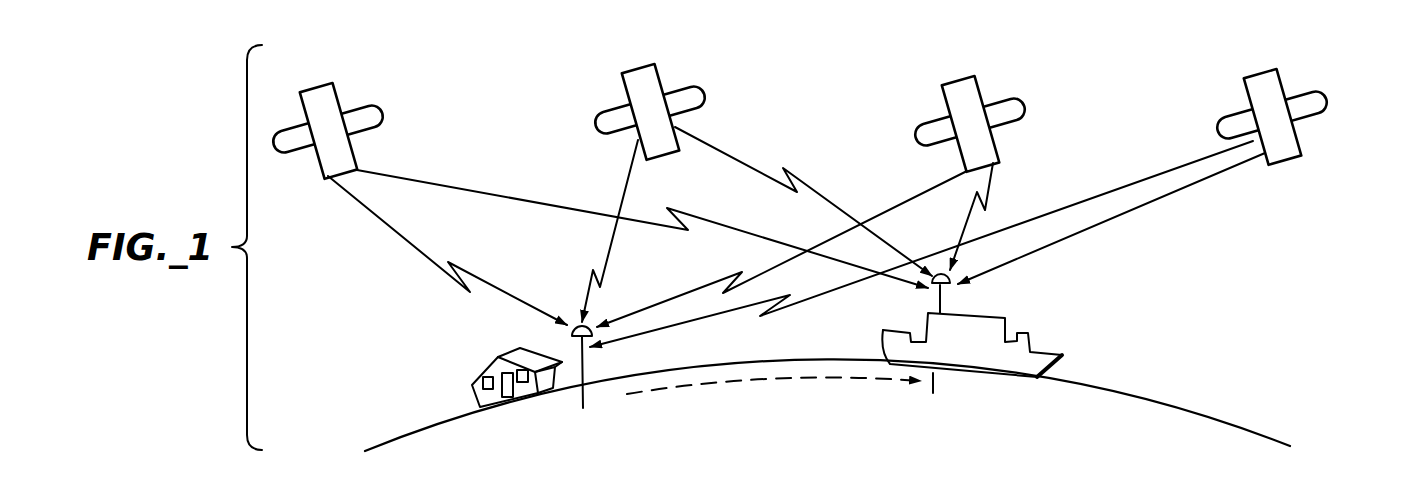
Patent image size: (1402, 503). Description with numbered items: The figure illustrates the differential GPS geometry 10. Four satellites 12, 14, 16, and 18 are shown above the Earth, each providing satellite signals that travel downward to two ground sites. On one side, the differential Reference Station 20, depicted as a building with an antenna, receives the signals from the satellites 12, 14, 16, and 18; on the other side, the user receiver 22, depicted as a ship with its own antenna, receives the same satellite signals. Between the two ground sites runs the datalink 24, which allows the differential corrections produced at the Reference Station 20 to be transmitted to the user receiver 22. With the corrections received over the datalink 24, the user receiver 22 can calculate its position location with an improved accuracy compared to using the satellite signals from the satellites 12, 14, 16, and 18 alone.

The differential GPS geometry 10 is at (343, 284).
The satellite 12 is at (337, 93).
The satellite 14 is at (658, 74).
The satellite 16 is at (980, 91).
The satellite 18 is at (1283, 81).
The differential reference station 20 is at (472, 384).
The user receiver 22 is at (1023, 333).
The datalink 24 is at (828, 383).